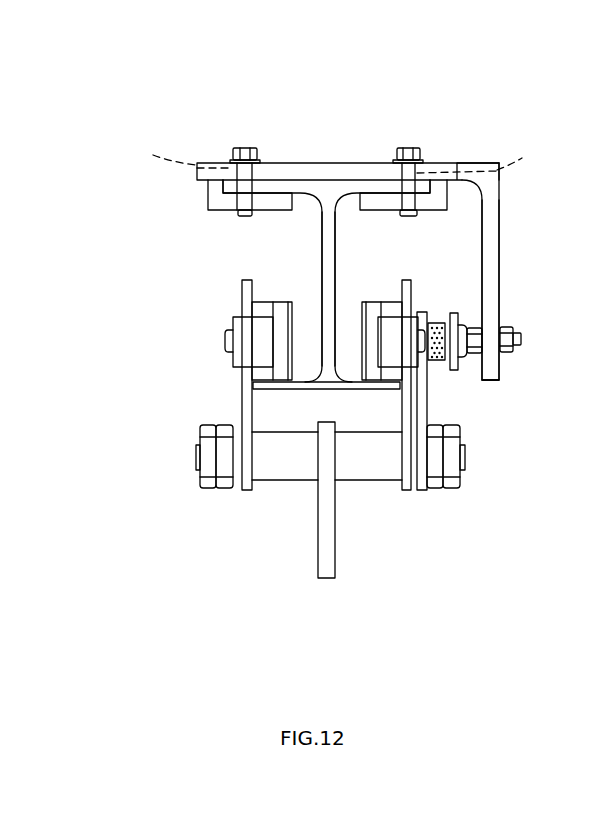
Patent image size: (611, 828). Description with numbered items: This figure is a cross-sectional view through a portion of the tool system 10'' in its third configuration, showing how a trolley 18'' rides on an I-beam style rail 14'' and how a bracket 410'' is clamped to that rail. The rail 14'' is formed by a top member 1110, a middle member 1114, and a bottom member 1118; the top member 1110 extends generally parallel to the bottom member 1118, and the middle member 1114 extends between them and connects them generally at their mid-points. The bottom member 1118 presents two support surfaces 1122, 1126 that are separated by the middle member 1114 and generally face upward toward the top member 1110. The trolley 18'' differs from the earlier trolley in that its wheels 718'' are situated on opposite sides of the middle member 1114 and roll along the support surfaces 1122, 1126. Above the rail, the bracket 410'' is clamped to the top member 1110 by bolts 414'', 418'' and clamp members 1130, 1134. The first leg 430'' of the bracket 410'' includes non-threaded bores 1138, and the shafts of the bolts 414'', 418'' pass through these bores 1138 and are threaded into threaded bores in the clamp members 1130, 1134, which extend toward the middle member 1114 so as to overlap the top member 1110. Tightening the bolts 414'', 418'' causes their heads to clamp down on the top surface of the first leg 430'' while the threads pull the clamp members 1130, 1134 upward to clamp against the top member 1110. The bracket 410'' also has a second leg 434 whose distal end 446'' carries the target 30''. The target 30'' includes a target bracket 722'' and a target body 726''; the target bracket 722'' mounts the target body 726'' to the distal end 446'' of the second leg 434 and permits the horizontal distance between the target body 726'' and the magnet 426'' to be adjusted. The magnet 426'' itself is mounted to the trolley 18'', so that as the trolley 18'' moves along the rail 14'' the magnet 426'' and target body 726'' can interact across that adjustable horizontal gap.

The tool system 10'' is at (155, 108).
The rail 14'' is at (326, 214).
The trolley 18'' is at (283, 513).
The target 30'' is at (476, 401).
The bracket 410'' is at (513, 226).
The bolt 414'' is at (225, 148).
The bolt 418'' is at (392, 148).
The magnet 426'' is at (508, 283).
The first leg 430'' is at (462, 136).
The second leg 434 is at (492, 278).
The distal end 446'' is at (520, 405).
The wheels 718'' is at (280, 422).
The target bracket 722'' is at (531, 319).
The target body 726'' is at (522, 345).
The top member 1110 is at (265, 187).
The middle member 1114 is at (325, 239).
The bottom member 1118 is at (290, 388).
The support surface 1122 is at (306, 373).
The support surface 1126 is at (348, 373).
The clamp member 1130 is at (217, 197).
The clamp member 1134 is at (437, 195).
The non-threaded bores 1138 is at (336, 153).